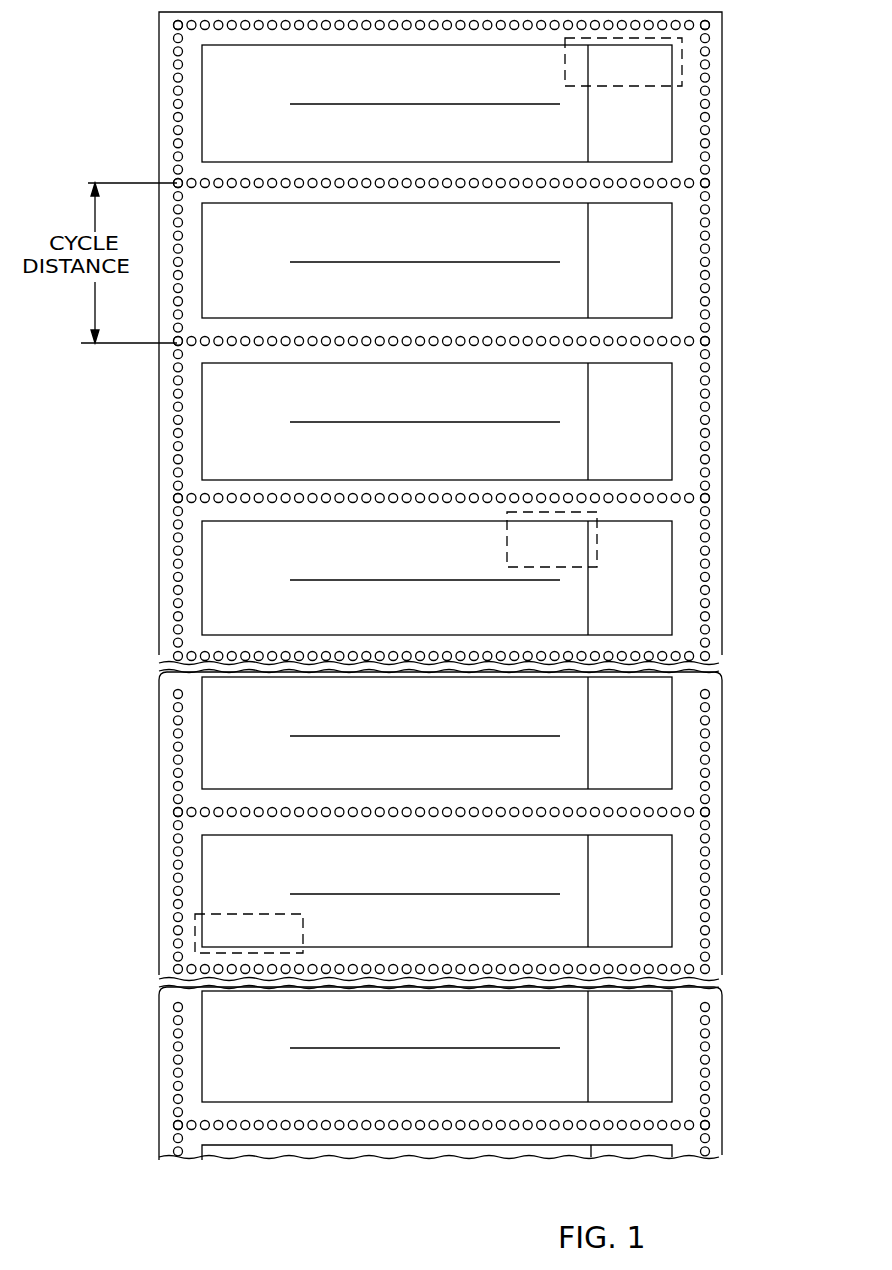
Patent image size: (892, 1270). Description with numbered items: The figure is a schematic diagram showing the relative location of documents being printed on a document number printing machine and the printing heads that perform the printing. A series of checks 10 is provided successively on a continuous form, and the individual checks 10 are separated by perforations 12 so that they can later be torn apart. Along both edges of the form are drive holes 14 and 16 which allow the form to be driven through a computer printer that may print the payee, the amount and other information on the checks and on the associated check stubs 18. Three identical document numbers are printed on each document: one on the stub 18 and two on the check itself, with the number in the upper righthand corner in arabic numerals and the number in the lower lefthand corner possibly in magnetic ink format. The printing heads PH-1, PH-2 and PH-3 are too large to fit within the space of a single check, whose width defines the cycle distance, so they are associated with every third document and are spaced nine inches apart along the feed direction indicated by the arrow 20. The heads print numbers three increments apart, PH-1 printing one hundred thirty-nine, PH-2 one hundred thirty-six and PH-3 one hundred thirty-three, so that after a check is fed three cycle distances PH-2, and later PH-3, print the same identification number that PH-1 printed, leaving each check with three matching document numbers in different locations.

The checks 10 is at (212, 60).
The perforations 12 is at (662, 175).
The drive holes 14 is at (175, 563).
The drive holes 16 is at (705, 395).
The check stubs 18 is at (648, 115).
The arrow 20 is at (421, 1167).
The printing head PH-1 is at (682, 68).
The printing head PH-2 is at (597, 512).
The printing head PH-3 is at (195, 938).